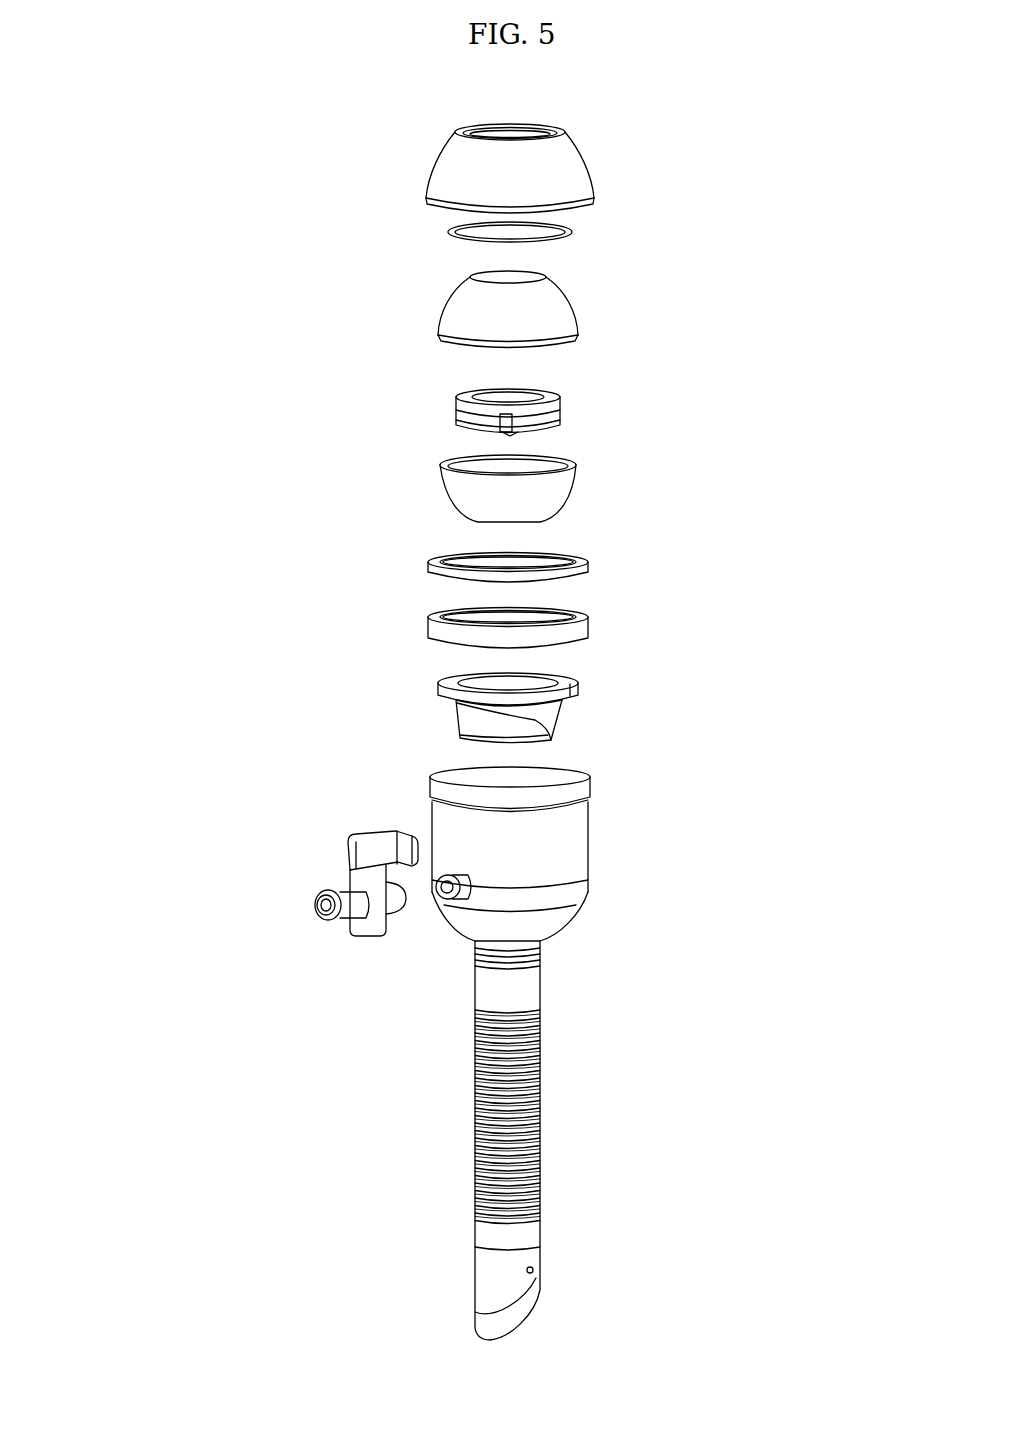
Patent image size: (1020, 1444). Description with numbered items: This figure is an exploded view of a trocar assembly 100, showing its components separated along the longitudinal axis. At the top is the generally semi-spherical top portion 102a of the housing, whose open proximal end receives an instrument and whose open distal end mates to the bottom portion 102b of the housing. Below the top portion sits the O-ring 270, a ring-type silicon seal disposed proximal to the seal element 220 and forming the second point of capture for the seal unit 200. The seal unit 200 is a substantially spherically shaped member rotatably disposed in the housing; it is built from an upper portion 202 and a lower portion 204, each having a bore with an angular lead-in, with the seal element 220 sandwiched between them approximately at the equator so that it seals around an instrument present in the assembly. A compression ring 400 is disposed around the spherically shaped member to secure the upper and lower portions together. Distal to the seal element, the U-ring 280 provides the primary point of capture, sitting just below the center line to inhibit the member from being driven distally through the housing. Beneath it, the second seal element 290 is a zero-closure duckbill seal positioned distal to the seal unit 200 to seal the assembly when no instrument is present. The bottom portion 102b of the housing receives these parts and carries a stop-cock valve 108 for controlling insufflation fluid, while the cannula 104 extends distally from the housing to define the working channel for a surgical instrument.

The trocar assembly 100 is at (150, 112).
The top portion of the housing 102a is at (557, 163).
The O-ring 270 is at (450, 232).
The seal unit 200 is at (600, 490).
The upper portion of the seal unit 202 is at (465, 303).
The seal element 220 is at (455, 408).
The lower portion of the seal unit 204 is at (475, 493).
The compression ring 400 is at (580, 570).
The U-ring 280 is at (445, 633).
The second seal element 290 is at (462, 716).
The bottom portion of the housing 102b is at (560, 848).
The cannula 104 is at (560, 1108).
The stop-cock valve 108 is at (363, 923).